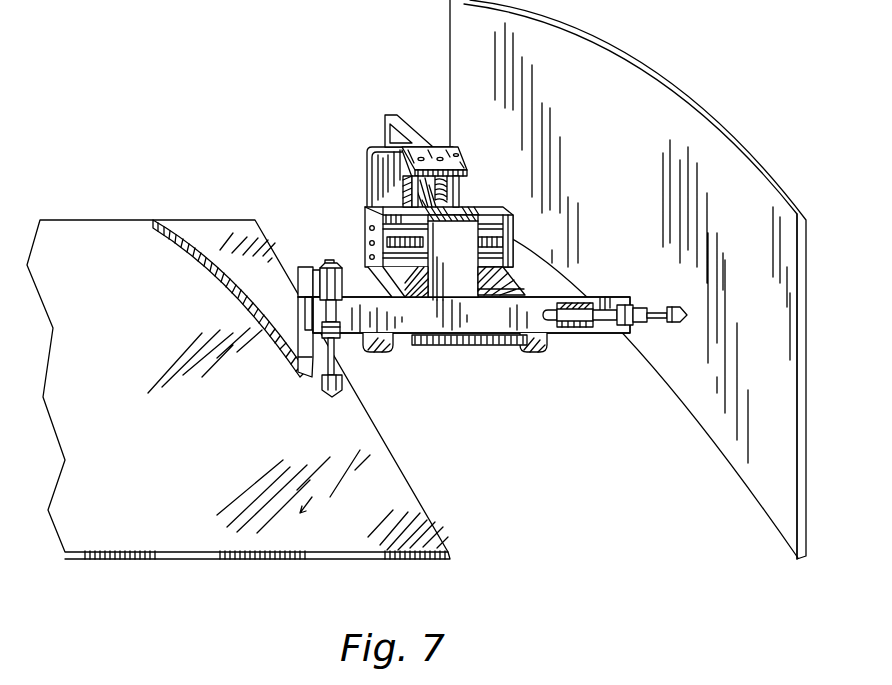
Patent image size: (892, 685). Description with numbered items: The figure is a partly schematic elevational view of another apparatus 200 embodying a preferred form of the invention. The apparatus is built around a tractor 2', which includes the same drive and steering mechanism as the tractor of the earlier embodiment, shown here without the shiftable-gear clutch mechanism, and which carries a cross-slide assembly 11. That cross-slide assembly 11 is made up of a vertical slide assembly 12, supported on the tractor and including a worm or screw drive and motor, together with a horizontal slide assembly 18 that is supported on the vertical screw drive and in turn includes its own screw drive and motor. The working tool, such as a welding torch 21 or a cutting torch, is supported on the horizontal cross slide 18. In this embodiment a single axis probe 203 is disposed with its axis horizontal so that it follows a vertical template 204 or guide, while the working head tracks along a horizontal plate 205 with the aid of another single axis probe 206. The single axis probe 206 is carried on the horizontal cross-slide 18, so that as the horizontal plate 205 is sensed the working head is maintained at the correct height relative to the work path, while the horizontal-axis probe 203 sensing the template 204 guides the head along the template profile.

The apparatus 200 is at (368, 135).
The tractor 2' is at (418, 239).
The cross-slide assembly 11 is at (475, 188).
The vertical slide assembly 12 is at (458, 147).
The horizontal slide assembly 18 is at (512, 235).
The welding torch 21 is at (300, 313).
The single axis probe 203 is at (638, 306).
The vertical template 204 is at (647, 97).
The horizontal plate 205 is at (199, 462).
The single axis probe 206 is at (340, 361).